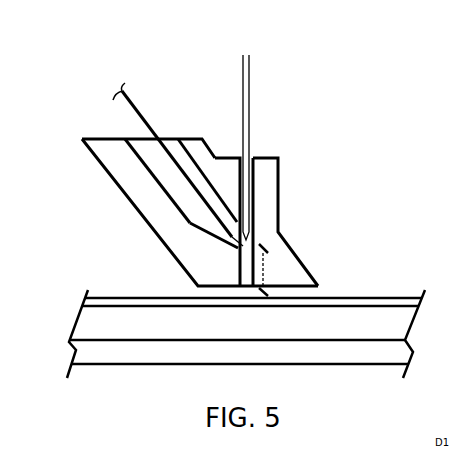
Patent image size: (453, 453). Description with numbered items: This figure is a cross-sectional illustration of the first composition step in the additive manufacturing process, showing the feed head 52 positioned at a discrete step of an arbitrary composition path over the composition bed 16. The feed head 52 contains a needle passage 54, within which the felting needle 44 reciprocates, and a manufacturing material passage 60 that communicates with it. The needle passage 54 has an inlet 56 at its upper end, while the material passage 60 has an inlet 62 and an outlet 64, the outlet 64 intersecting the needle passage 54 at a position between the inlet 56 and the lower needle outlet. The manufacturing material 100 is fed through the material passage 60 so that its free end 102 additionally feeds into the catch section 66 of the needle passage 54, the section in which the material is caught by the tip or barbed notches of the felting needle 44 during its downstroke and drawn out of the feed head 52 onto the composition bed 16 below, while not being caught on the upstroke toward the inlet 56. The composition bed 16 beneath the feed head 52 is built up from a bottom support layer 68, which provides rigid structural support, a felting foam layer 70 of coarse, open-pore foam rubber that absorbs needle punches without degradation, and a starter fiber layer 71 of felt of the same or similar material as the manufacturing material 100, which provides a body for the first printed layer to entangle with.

The composition bed 16 is at (100, 366).
The felting needle 44 is at (238, 95).
The feed head 52 is at (279, 182).
The needle passage 54 is at (247, 200).
The inlet 56 is at (256, 170).
The manufacturing material passage 60 is at (158, 163).
The inlet 62 is at (136, 137).
The outlet 64 is at (235, 245).
The catch section 66 is at (267, 260).
The bottom support layer 68 is at (163, 350).
The felting foam layer 70 is at (398, 323).
The starter fiber layer 71 is at (350, 296).
The manufacturing material 100 is at (147, 135).
The free end 102 is at (258, 236).